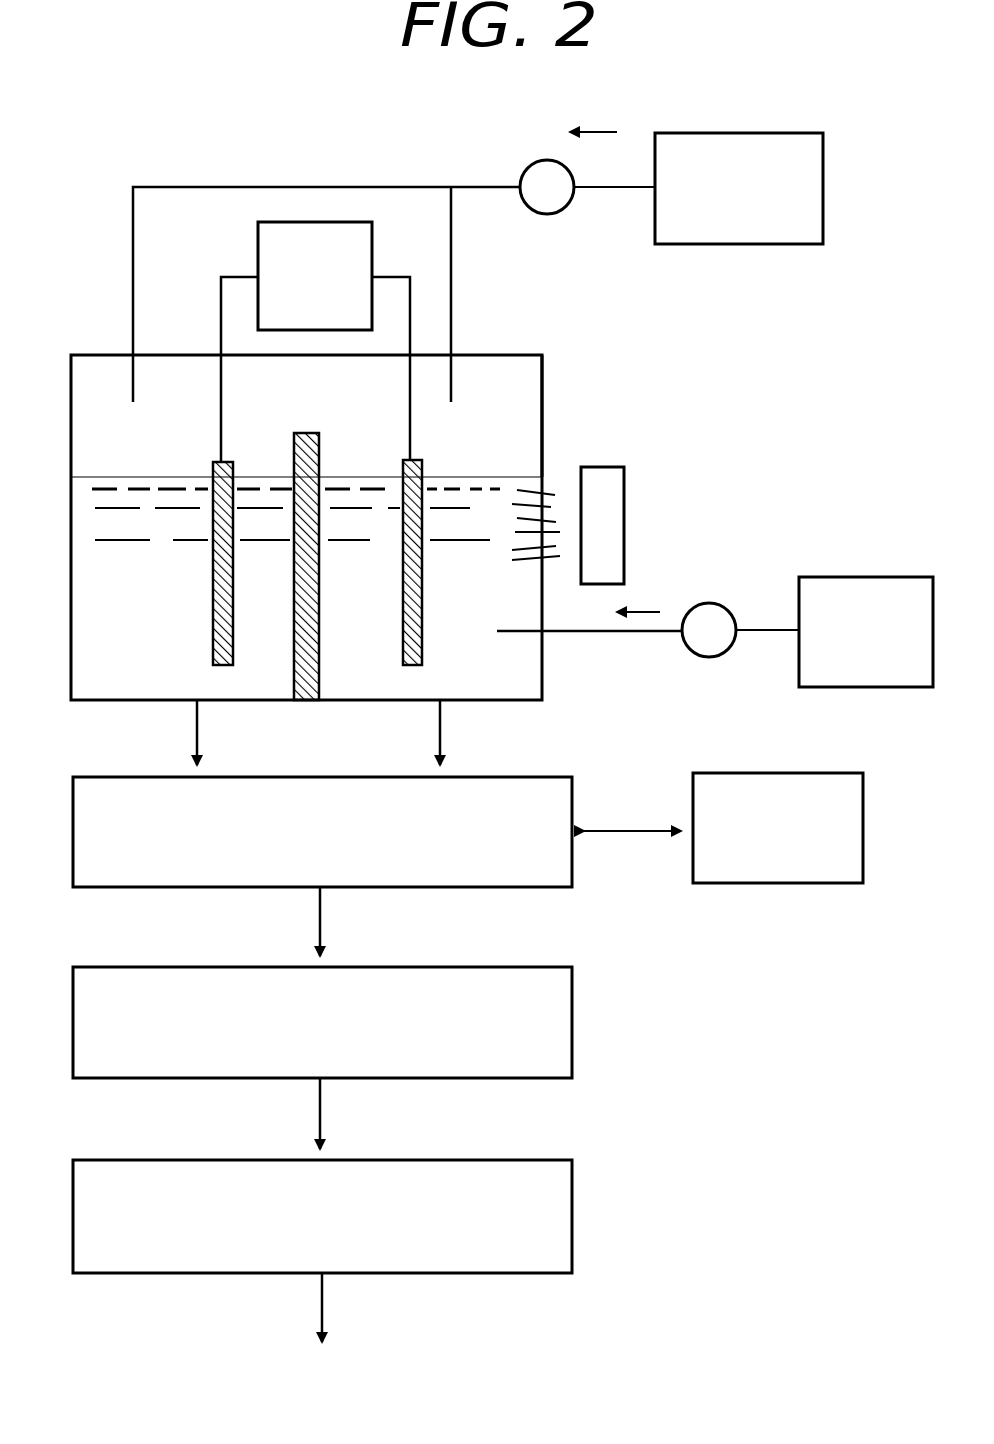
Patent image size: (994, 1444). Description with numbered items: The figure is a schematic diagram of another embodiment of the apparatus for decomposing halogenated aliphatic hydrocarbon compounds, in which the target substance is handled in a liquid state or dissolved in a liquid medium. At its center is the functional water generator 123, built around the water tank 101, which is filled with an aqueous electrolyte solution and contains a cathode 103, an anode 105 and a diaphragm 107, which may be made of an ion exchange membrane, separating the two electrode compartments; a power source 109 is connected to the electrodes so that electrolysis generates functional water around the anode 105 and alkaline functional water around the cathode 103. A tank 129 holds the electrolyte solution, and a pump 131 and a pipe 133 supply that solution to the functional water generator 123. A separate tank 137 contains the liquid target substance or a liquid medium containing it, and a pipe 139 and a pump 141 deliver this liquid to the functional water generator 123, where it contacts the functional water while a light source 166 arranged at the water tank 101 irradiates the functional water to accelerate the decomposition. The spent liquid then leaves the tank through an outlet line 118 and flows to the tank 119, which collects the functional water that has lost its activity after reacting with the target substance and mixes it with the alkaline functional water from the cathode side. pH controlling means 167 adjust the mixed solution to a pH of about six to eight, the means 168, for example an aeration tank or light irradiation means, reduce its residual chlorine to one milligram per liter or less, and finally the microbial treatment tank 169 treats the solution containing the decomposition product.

The water tank 101 is at (542, 680).
The cathode 103 is at (212, 615).
The anode 105 is at (423, 613).
The diaphragm 107 is at (323, 670).
The power source 109 is at (315, 342).
The outlet line 118 is at (443, 722).
The tank for collecting the functional water 119 is at (322, 832).
The functional water generator 123 is at (542, 385).
The tank holding an electrolyte solution 129 is at (739, 188).
The pump 131 is at (543, 162).
The pipe 133 is at (277, 182).
The tank 137 is at (866, 632).
The pipe 139 is at (573, 632).
The pump 141 is at (718, 603).
The light source 166 is at (625, 520).
The pH controlling means 167 is at (778, 828).
The means to reduce the residual chlorine concentration 168 is at (322, 1022).
The microbial treatment tank 169 is at (322, 1216).